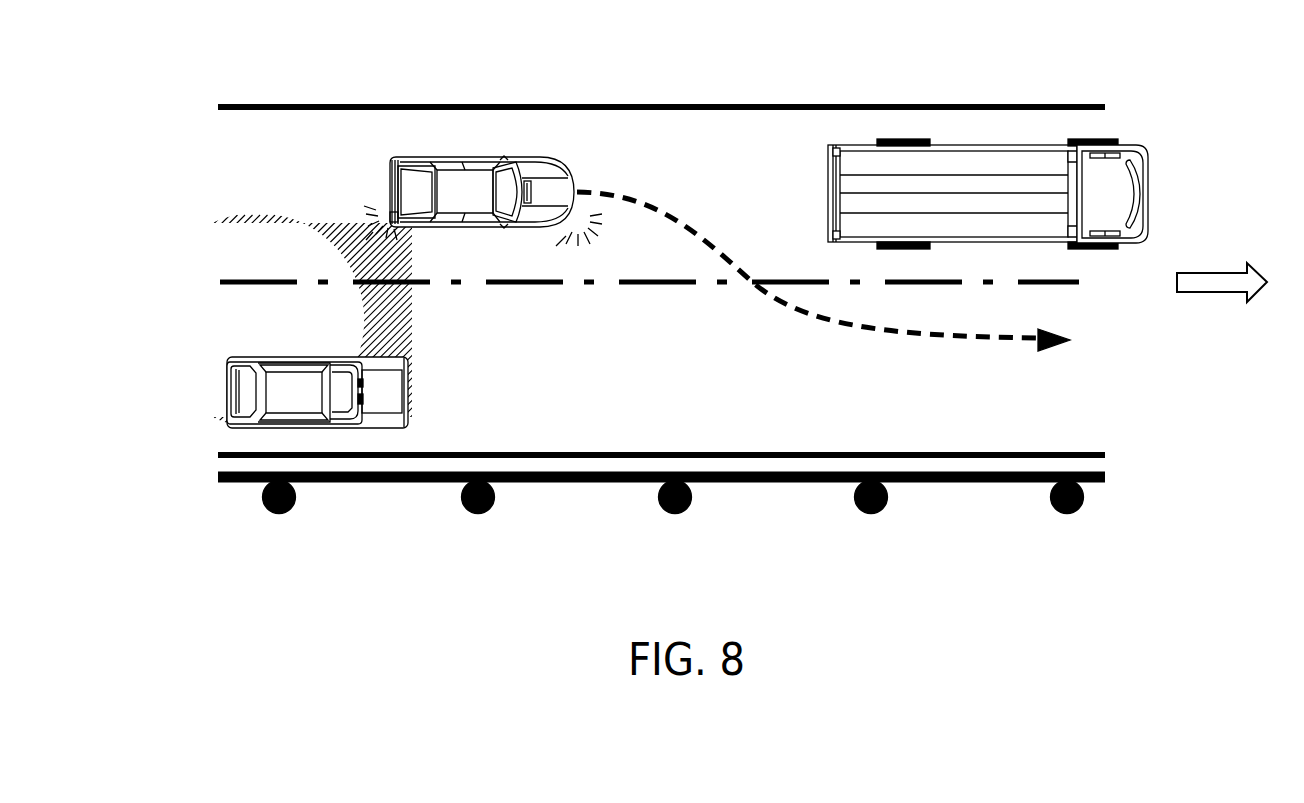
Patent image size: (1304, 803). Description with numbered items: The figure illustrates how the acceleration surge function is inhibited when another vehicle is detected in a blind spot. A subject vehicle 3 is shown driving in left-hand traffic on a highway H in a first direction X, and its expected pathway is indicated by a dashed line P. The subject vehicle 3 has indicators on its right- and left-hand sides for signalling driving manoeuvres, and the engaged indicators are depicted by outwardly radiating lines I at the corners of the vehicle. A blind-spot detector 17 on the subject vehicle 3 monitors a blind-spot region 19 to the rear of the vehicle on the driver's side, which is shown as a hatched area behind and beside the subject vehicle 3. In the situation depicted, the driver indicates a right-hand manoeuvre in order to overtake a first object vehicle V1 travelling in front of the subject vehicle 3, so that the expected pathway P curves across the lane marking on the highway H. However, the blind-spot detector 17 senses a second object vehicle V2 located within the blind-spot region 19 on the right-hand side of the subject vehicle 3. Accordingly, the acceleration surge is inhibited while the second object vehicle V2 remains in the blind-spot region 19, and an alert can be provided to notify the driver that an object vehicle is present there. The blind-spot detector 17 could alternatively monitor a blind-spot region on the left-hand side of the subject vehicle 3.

The subject vehicle 3 is at (462, 186).
The blind-spot detector 17 is at (388, 210).
The blind-spot region 19 is at (222, 236).
The indicator engagement lines I is at (553, 236).
The first object vehicle V1 is at (1122, 193).
The second object vehicle V2 is at (395, 394).
The expected pathway P is at (792, 311).
The highway H is at (590, 456).
The first direction X is at (1222, 271).